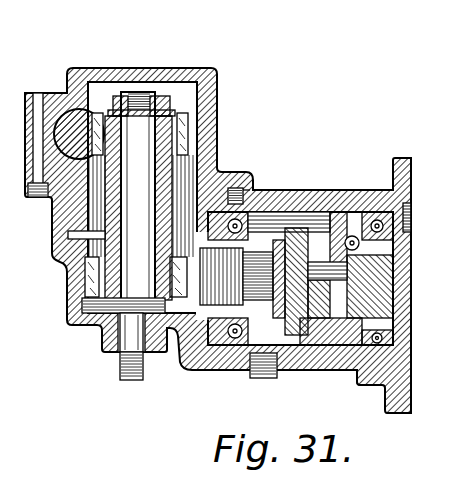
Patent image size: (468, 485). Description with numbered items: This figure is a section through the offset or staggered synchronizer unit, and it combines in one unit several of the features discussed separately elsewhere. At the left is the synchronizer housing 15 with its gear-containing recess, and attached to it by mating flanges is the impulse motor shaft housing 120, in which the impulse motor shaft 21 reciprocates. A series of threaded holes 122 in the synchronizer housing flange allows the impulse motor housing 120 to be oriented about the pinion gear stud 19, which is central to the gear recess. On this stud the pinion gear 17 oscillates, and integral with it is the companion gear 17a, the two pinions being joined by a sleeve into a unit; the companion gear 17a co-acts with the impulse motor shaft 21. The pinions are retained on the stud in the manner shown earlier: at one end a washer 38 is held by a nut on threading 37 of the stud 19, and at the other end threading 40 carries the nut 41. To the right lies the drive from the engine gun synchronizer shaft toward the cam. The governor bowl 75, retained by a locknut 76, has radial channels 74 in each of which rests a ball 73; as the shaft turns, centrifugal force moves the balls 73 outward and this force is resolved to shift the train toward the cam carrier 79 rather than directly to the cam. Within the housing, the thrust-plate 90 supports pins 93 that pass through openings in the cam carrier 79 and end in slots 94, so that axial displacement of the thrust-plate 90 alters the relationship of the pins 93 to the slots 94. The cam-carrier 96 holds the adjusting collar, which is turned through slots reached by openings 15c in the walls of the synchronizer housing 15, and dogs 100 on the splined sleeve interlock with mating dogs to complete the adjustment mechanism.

The impulse motor shaft housing 120 is at (82, 75).
The washer 38 is at (100, 115).
The threading 37 is at (140, 95).
The nut 41 is at (163, 96).
The impulse motor shaft 21 is at (74, 108).
The companion gear 17a is at (205, 125).
The cam-carrier 96 is at (222, 188).
The threaded holes 122 is at (47, 200).
The dogs 100 is at (286, 225).
The pins 93 is at (327, 218).
The thrust-plate 90 is at (340, 212).
The radial channels 74 is at (352, 235).
The ball 73 is at (384, 200).
The pinion gear 17 is at (90, 283).
The pinion gear stud 19 is at (132, 333).
The threading 40 is at (121, 376).
The slots 94 is at (213, 340).
The openings 15c is at (270, 378).
The synchronizer housing 15 is at (309, 368).
The cam carrier 79 is at (328, 356).
The governor bowl 75 is at (367, 386).
The locknut 76 is at (396, 413).